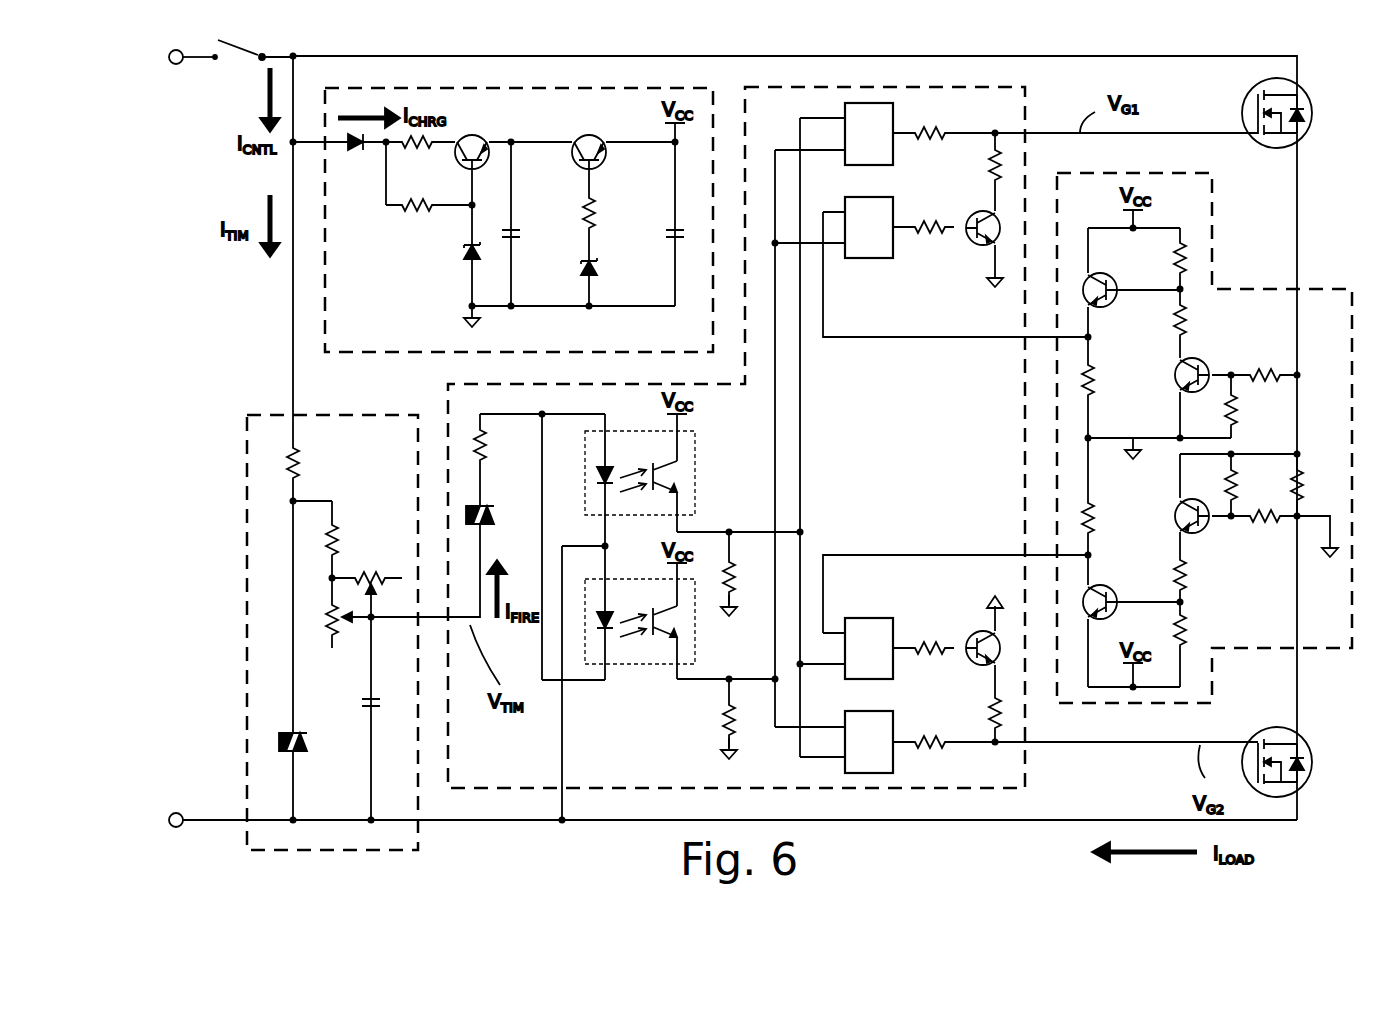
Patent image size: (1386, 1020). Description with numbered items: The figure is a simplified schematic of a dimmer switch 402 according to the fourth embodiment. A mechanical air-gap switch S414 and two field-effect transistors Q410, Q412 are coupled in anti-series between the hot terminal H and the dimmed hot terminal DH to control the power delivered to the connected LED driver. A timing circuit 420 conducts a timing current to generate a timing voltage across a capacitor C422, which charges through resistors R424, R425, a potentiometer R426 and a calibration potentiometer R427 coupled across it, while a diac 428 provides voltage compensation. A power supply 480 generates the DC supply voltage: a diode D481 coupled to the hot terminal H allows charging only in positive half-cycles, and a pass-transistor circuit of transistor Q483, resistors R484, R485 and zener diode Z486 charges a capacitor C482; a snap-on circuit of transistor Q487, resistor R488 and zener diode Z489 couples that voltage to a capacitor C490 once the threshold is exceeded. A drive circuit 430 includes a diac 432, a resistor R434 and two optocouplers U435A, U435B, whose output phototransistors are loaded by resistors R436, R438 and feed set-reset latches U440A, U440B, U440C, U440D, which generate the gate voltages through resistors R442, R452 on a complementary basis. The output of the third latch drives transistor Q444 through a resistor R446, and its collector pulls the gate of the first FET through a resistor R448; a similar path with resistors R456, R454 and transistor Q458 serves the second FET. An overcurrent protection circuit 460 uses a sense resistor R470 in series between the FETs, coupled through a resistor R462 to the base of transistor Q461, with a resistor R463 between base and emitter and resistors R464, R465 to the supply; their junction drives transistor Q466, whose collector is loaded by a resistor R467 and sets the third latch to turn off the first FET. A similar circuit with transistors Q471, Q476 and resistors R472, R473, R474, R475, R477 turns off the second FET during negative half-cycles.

The dimmer switch 402 is at (920, 850).
The timing circuit 420 is at (285, 413).
The diac 428 is at (308, 742).
The drive circuit 430 is at (1027, 766).
The diac 432 is at (494, 512).
The overcurrent protection circuit 460 is at (1240, 287).
The power supply 480 is at (405, 354).
The hot terminal H is at (178, 70).
The dimmed hot terminal DH is at (180, 812).
The mechanical air-gap switch S414 is at (240, 52).
The field-effect transistor Q410 is at (1245, 92).
The field-effect transistor Q412 is at (1280, 728).
The resistor R424 is at (305, 468).
The resistor R425 is at (340, 525).
The potentiometer R426 is at (326, 620).
The calibration potentiometer R427 is at (372, 568).
The capacitor C422 is at (362, 710).
The resistor R434 is at (487, 440).
The first optocoupler U435A is at (710, 478).
The second optocoupler U435B is at (640, 666).
The resistor R436 is at (737, 570).
The resistor R438 is at (722, 725).
The first SR latch U440A is at (893, 113).
The second SR latch U440B is at (893, 762).
The third SR latch U440C is at (862, 258).
The fourth SR latch U440D is at (855, 618).
The resistor R442 is at (940, 140).
The resistor R446 is at (940, 235).
The resistor R448 is at (987, 180).
The NPN bipolar junction transistor Q444 is at (975, 248).
The resistor R452 is at (930, 732).
The resistor R454 is at (988, 700).
The resistor R456 is at (940, 640).
The transistor Q458 is at (965, 630).
The NPN bipolar junction transistor Q461 is at (1175, 372).
The resistor R462 is at (1280, 367).
The resistor R463 is at (1240, 400).
The resistor R464 is at (1190, 315).
The resistor R465 is at (1172, 258).
The PNP bipolar junction transistor Q466 is at (1112, 308).
The resistor R467 is at (1096, 378).
The sense resistor R470 is at (1305, 482).
The transistor Q471 is at (1172, 506).
The resistor R472 is at (1258, 478).
The resistor R473 is at (1265, 523).
The resistor R474 is at (1190, 575).
The resistor R475 is at (1188, 620).
The transistor Q476 is at (1128, 580).
The resistor R477 is at (1097, 520).
The diode D481 is at (352, 146).
The capacitor C482 is at (520, 230).
The NPN bipolar junction transistor Q483 is at (477, 134).
The resistor R484 is at (420, 150).
The resistor R485 is at (410, 212).
The zener diode Z486 is at (460, 252).
The PNP bipolar junction transistor Q487 is at (608, 160).
The resistor R488 is at (598, 215).
The zener diode Z489 is at (570, 265).
The capacitor C490 is at (665, 243).